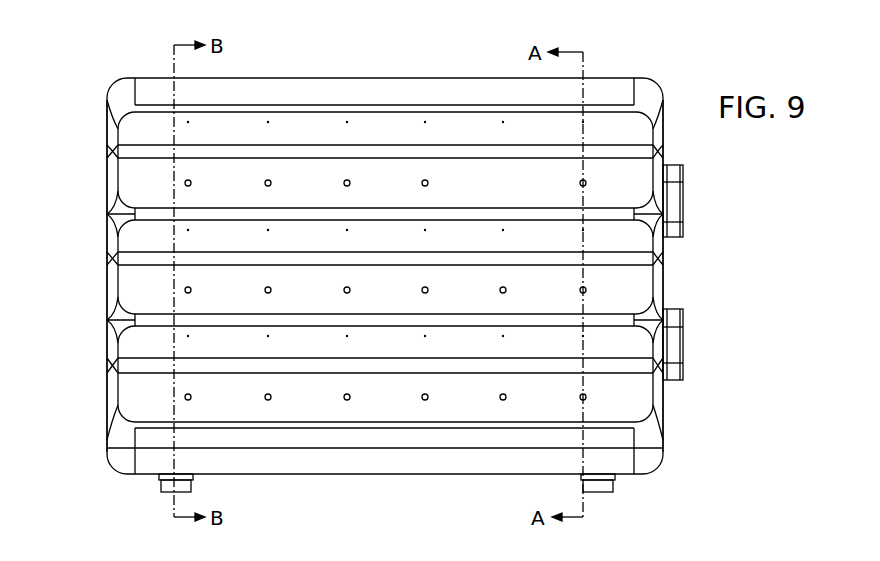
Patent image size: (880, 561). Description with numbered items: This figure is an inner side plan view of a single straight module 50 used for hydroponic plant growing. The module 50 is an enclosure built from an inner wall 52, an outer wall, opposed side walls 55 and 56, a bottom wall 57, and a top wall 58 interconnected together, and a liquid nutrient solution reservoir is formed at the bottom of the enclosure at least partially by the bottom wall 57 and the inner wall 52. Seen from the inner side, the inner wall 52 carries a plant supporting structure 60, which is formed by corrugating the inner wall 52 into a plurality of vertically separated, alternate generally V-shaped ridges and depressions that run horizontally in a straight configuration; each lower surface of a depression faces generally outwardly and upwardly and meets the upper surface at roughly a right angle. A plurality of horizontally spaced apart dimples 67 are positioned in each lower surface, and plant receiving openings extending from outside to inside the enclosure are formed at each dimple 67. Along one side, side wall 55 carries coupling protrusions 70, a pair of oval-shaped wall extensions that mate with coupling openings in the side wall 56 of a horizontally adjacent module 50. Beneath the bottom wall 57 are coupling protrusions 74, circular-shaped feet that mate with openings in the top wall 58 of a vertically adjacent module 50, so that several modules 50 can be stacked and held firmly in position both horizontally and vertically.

The single straight module 50 is at (762, 232).
The inner wall 52 is at (243, 118).
The side wall 55 is at (655, 150).
The side wall 56 is at (105, 128).
The bottom wall 57 is at (342, 475).
The top wall 58 is at (363, 77).
The plant supporting structure 60 is at (257, 420).
The dimples 67 is at (340, 184).
The coupling protrusions 70 is at (680, 233).
The coupling protrusions 74 is at (598, 487).